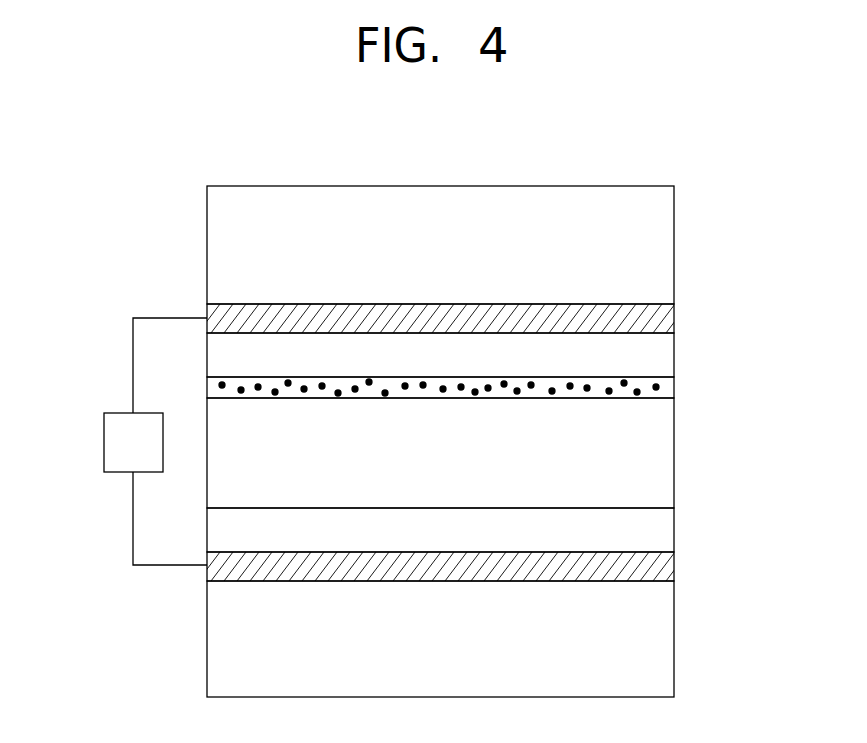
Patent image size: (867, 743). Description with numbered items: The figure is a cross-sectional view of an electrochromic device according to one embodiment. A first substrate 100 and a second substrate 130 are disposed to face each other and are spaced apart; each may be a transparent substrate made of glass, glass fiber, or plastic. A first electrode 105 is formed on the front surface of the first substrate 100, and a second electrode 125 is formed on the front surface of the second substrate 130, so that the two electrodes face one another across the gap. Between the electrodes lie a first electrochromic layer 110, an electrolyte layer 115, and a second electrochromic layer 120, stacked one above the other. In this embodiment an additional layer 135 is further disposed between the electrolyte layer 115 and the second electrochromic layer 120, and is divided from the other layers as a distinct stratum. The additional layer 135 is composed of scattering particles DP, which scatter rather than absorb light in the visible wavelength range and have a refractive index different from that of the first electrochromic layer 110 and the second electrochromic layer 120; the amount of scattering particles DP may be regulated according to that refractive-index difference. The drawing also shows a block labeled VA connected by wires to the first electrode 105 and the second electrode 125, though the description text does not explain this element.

The first substrate 100 is at (663, 640).
The first electrode 105 is at (663, 567).
The first electrochromic layer 110 is at (663, 529).
The electrolyte layer 115 is at (663, 452).
The second electrochromic layer 120 is at (663, 353).
The second electrode 125 is at (663, 318).
The second substrate 130 is at (663, 245).
The additional layer 135 is at (482, 404).
The scattering particles DP is at (656, 390).
The voltage applying unit VA is at (104, 443).